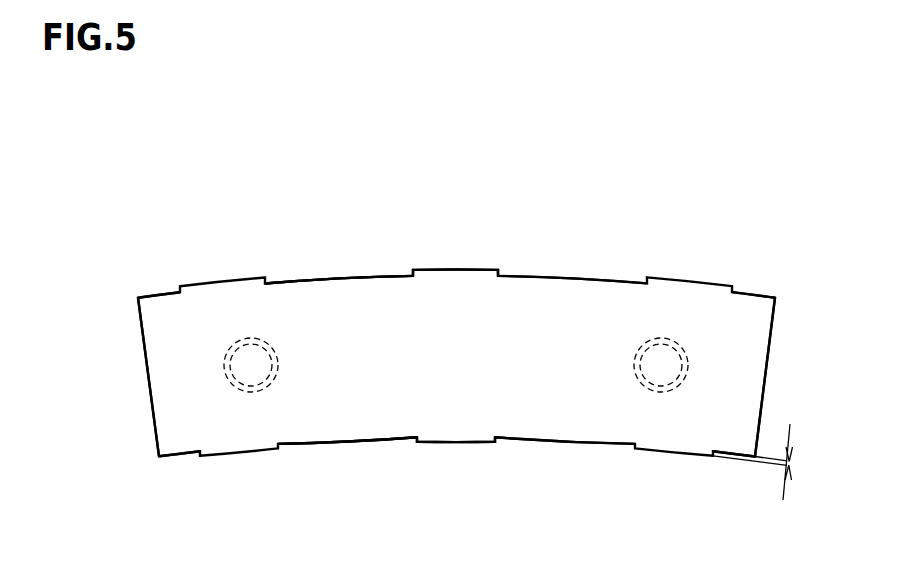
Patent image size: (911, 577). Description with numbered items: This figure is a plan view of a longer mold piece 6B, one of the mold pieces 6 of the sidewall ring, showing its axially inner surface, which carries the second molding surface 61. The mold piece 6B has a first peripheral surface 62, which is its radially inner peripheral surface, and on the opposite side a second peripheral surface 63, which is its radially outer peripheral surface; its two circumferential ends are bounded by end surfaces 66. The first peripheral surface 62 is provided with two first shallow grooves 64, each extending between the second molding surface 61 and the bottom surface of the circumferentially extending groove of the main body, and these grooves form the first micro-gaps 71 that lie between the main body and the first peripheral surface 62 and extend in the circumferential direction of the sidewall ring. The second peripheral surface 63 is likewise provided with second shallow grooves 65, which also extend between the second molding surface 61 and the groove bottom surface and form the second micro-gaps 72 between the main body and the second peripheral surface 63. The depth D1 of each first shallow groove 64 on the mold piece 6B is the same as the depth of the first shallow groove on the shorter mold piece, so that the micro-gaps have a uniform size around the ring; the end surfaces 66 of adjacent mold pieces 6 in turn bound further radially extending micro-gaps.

The mold piece 6 is at (670, 227).
The mold piece having a large circumferential length 6B is at (645, 212).
The second molding surface 61 is at (239, 303).
The first peripheral surface 62 is at (452, 443).
The second peripheral surface 63 is at (453, 269).
The first shallow groove 64 is at (176, 458).
The second shallow groove 65 is at (152, 291).
The end surface 66 is at (769, 355).
The first micro-gap 71 is at (302, 447).
The second micro-gap 72 is at (300, 274).
The depth of the first shallow groove D1 is at (792, 463).